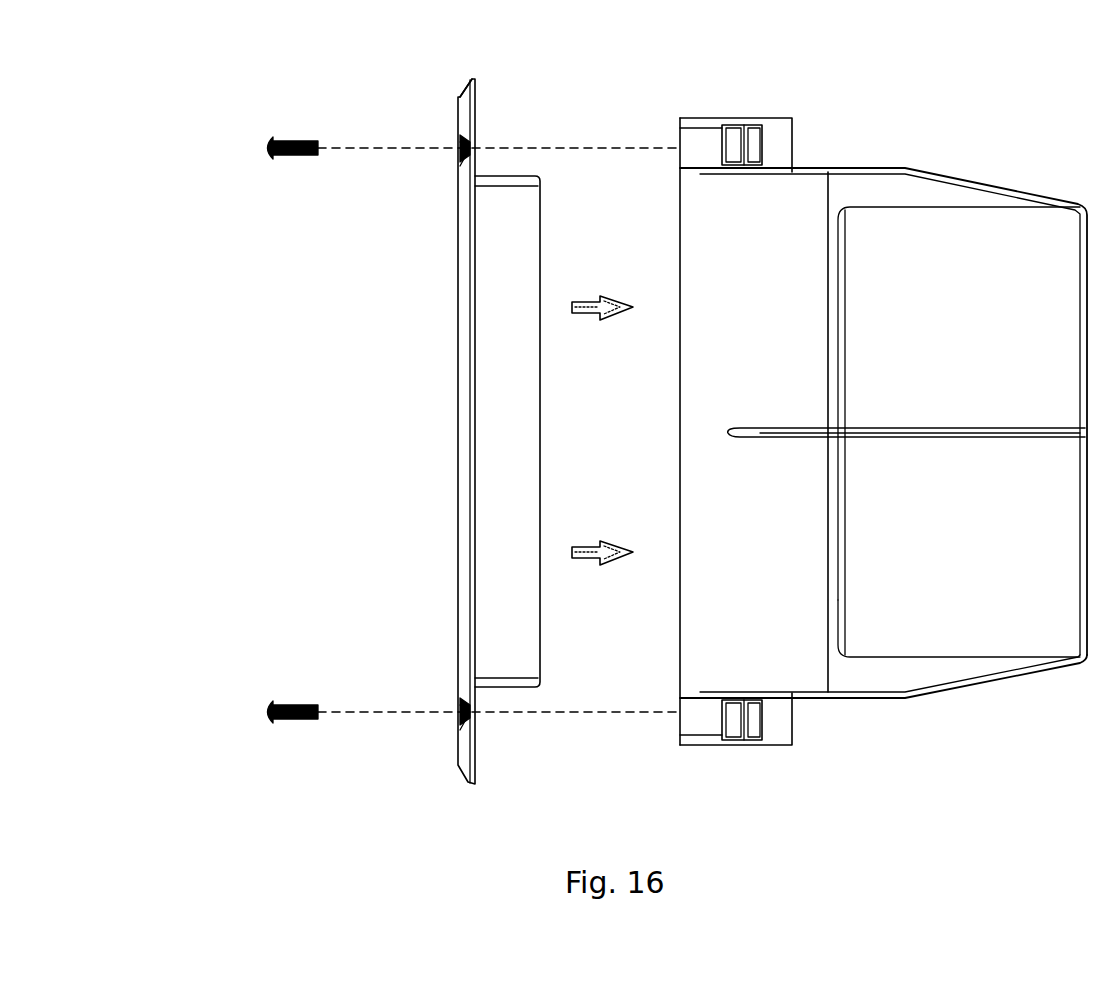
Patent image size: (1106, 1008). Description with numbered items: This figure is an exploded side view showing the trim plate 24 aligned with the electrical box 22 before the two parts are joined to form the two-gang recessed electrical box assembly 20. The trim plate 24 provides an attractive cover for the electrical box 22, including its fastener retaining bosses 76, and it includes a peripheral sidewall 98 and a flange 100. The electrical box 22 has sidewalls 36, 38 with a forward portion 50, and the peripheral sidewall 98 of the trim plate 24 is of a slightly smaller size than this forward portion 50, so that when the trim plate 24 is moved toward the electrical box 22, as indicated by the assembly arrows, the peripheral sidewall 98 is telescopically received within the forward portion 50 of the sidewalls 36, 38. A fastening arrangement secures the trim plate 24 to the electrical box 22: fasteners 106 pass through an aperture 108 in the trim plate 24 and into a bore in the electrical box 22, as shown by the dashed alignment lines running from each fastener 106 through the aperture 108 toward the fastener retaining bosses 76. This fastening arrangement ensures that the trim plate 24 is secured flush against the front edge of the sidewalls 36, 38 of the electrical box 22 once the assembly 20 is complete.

The two-gang recessed electrical box assembly 20 is at (222, 224).
The electrical box 22 is at (883, 415).
The trim plate 24 is at (462, 775).
The sidewall 36 is at (888, 630).
The sidewall 38 is at (813, 165).
The forward portion 50 is at (765, 332).
The fastener retaining bosses 76 is at (733, 150).
The peripheral sidewall 98 is at (507, 175).
The flange 100 is at (460, 113).
The fasteners 106 is at (293, 140).
The aperture 108 is at (458, 148).